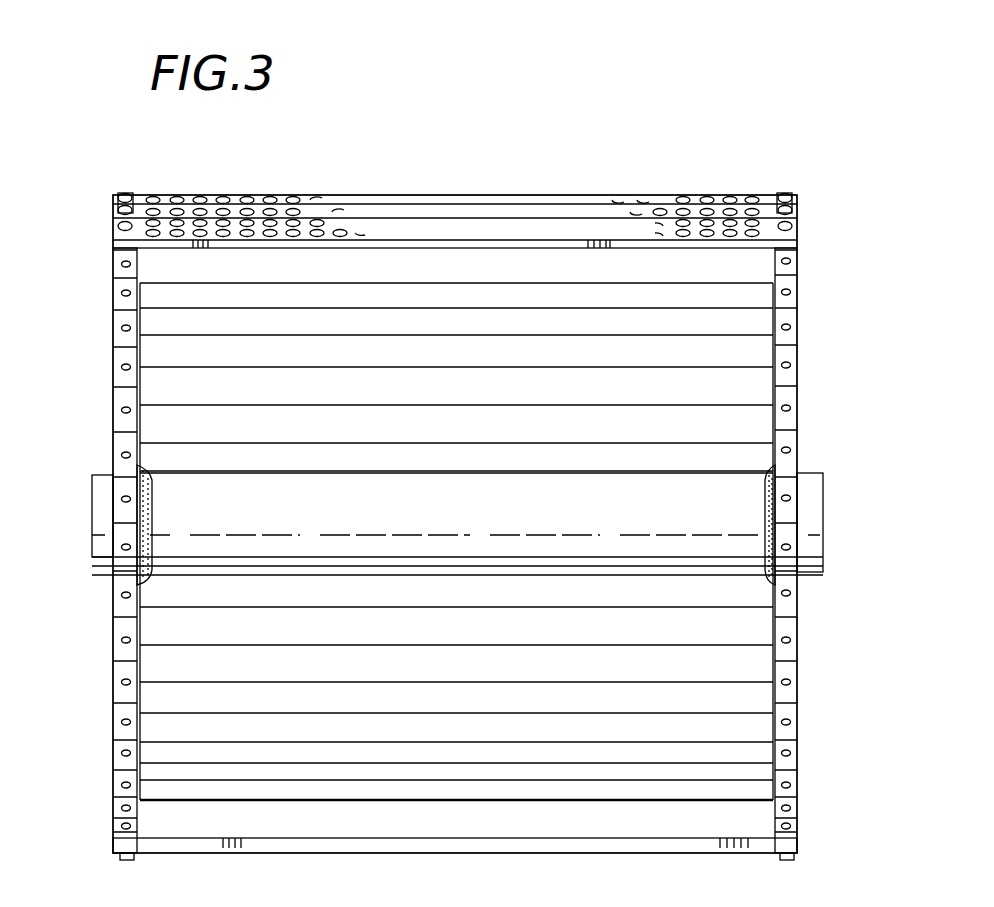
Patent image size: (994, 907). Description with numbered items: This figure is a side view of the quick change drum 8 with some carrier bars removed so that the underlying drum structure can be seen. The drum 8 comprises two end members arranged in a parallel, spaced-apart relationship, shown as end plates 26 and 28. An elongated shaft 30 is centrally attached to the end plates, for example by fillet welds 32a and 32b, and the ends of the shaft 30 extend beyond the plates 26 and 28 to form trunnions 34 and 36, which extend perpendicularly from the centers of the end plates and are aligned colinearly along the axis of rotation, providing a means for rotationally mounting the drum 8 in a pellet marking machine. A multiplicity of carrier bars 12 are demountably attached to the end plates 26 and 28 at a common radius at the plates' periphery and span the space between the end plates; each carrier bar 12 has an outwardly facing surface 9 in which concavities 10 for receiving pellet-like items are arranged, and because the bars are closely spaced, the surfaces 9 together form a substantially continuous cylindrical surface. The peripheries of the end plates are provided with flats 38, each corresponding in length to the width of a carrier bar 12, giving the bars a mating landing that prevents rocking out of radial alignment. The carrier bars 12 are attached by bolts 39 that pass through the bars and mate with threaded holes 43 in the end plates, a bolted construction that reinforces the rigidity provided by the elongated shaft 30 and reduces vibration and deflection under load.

The quick change drum 8 is at (707, 146).
The outwardly facing surface 9 is at (142, 212).
The concavities 10 is at (250, 214).
The carrier bars 12 is at (503, 228).
The bolts 39 is at (795, 226).
The end plate 28 is at (113, 345).
The end plate 26 is at (797, 307).
The flats 38 is at (113, 375).
The threaded holes 43 is at (122, 455).
The elongated shaft 30 is at (429, 493).
The fillet weld 32a is at (765, 493).
The fillet weld 32b is at (148, 518).
The trunnion 34 is at (820, 500).
The trunnion 36 is at (92, 510).